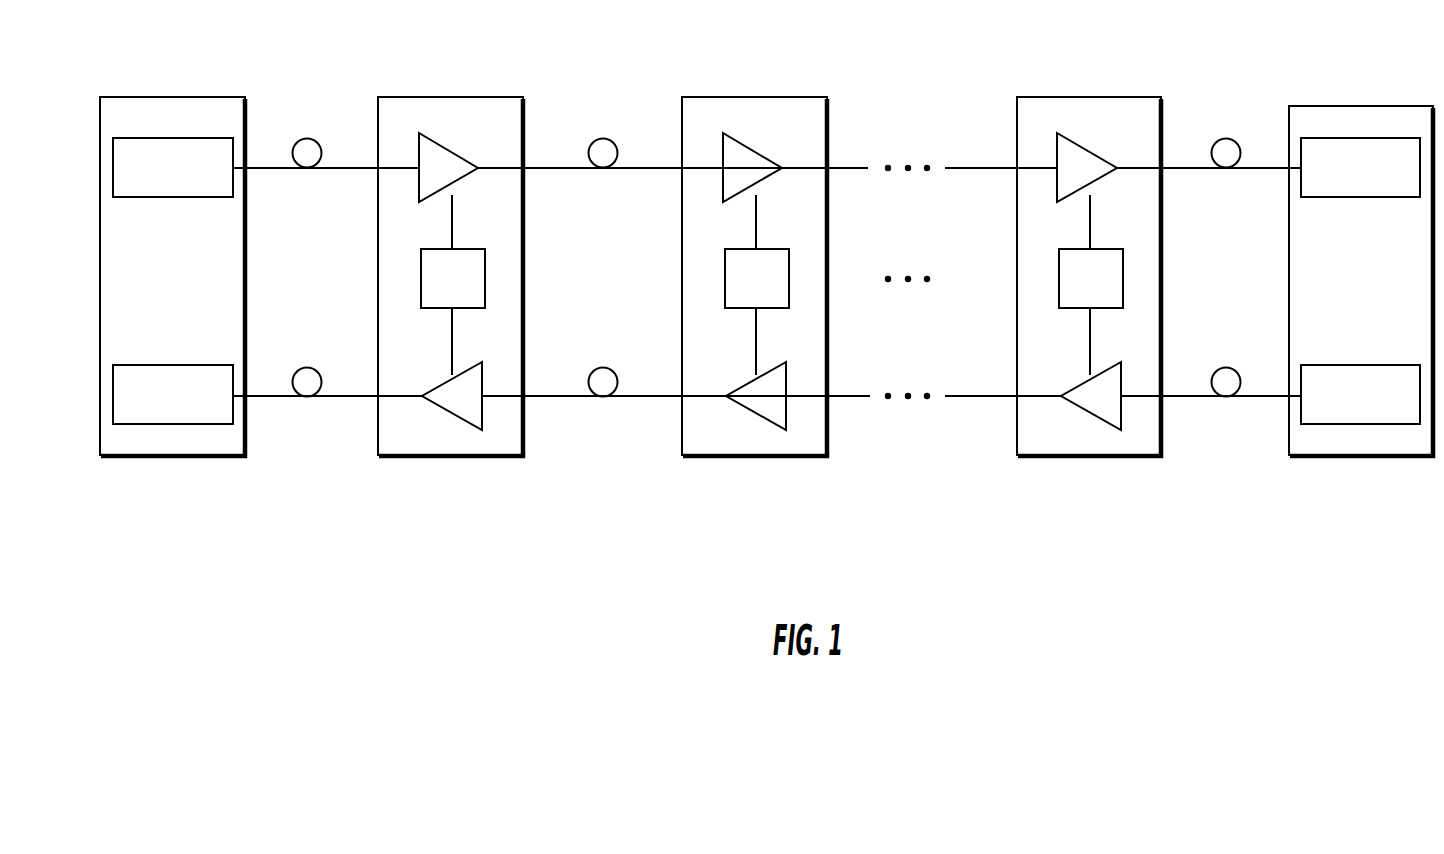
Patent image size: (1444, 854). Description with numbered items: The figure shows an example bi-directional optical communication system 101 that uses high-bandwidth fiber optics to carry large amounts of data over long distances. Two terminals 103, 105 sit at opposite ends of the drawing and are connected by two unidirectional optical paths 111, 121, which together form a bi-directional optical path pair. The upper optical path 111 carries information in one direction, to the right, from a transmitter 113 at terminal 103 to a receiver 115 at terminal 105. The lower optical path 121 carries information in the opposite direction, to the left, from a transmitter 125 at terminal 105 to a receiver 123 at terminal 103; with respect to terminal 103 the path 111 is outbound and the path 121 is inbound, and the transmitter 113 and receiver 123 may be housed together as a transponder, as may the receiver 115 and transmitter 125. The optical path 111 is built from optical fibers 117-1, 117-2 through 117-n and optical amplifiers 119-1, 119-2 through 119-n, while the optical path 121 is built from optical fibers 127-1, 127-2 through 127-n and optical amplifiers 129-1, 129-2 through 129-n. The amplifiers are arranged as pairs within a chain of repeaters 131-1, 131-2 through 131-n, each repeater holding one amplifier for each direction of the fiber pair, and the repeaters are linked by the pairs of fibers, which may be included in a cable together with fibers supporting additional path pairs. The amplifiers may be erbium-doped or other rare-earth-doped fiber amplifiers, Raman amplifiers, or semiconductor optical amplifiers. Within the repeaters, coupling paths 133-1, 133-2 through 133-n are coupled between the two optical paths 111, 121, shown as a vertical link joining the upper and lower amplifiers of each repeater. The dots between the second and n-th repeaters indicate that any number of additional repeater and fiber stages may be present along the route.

The bi-directional optical communication system 101 is at (836, 575).
The terminal 103 is at (172, 276).
The terminal 105 is at (1361, 279).
The optical path 111 is at (577, 92).
The transmitter 113 is at (173, 167).
The receiver 115 is at (1360, 167).
The optical fiber 117-1 is at (270, 168).
The optical fiber 117-2 is at (560, 168).
The optical fiber 117-n is at (1183, 168).
The optical amplifier 119-1 is at (448, 167).
The optical amplifier 119-2 is at (752, 167).
The optical amplifier 119-n is at (1087, 167).
The optical path 121 is at (575, 485).
The receiver 123 is at (173, 394).
The transmitter 125 is at (1360, 394).
The optical fiber 127-1 is at (270, 396).
The optical fiber 127-2 is at (560, 396).
The optical fiber 127-n is at (1183, 396).
The optical amplifier 129-1 is at (452, 396).
The optical amplifier 129-2 is at (756, 396).
The optical amplifier 129-n is at (1091, 396).
The repeater 131-1 is at (450, 276).
The repeater 131-2 is at (754, 276).
The repeater 131-n is at (1089, 276).
The coupling path 133-1 is at (453, 285).
The coupling path 133-2 is at (757, 285).
The coupling path 133-n is at (1091, 285).